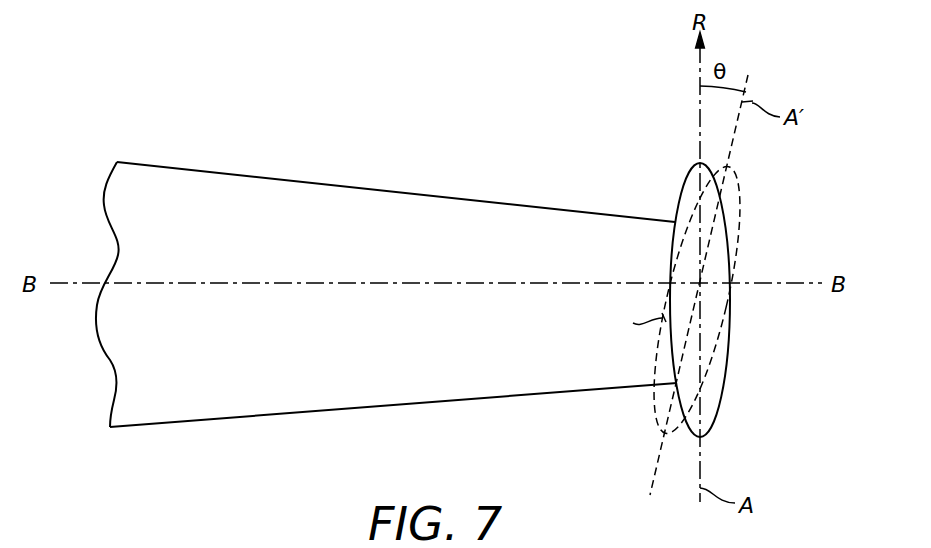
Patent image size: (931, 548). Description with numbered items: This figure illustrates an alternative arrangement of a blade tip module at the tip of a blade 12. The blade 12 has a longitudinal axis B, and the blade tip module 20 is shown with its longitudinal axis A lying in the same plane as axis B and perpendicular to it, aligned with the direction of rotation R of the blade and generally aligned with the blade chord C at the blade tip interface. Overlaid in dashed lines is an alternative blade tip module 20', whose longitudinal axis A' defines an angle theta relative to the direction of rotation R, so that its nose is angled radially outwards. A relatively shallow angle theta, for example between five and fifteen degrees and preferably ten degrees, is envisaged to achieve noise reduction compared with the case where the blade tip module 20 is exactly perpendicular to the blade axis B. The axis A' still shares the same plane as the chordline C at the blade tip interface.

The blade 12 is at (295, 404).
The blade tip module 20 is at (725, 307).
The alternative blade tip module 20' is at (714, 300).